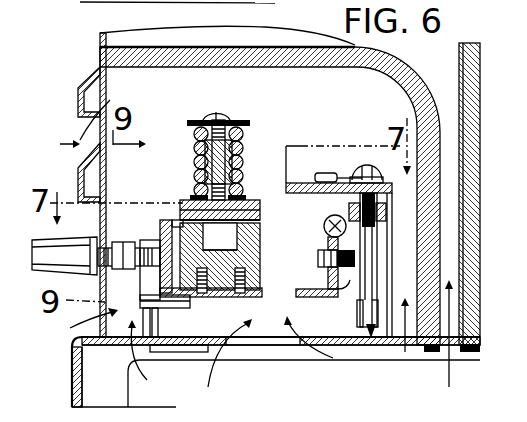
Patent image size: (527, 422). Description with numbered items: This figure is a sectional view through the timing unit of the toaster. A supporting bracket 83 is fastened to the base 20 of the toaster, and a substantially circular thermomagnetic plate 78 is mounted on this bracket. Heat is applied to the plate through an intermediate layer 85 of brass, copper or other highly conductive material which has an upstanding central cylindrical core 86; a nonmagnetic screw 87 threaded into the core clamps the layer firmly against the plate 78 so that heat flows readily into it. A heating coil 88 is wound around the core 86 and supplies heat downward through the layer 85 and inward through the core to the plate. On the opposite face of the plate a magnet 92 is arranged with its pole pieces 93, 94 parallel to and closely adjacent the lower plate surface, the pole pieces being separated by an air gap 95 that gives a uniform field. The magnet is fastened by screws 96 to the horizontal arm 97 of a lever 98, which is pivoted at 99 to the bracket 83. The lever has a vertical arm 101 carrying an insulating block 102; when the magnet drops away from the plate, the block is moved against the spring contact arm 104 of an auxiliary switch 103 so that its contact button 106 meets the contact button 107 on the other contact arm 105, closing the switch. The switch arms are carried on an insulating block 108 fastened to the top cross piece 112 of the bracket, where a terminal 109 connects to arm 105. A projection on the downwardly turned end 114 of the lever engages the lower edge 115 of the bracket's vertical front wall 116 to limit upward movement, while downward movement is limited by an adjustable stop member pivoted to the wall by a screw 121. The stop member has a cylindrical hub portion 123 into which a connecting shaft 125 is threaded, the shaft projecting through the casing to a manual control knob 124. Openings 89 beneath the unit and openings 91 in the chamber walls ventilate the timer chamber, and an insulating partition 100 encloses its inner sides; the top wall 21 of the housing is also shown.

The base 20 is at (73, 351).
The top cover wall 21 is at (100, 47).
The thermomagnetic plate 78 is at (287, 160).
The supporting bracket 83 is at (391, 259).
The intermediate layer 85 is at (258, 200).
The central cylindrical core 86 is at (262, 163).
The screw 87 is at (259, 216).
The heating coil 88 is at (248, 128).
The openings 89 is at (271, 346).
The openings 91 is at (93, 86).
The magnet 92 is at (218, 241).
The pole piece 93 is at (258, 228).
The pole piece 94 is at (182, 208).
The air gap 95 is at (251, 259).
The screws 96 is at (202, 294).
The horizontal arm 97 is at (240, 294).
The lever 98 is at (280, 326).
The pivot 99 is at (331, 228).
The insulating partition 100 is at (379, 66).
The vertical arm 101 is at (333, 275).
The insulating block 102 is at (340, 296).
The auxiliary switch 103 is at (373, 338).
The spring contact arm 104 is at (358, 281).
The contact arm 105 is at (373, 283).
The contact button 106 is at (364, 326).
The contact button 107 is at (371, 327).
The insulating block 108 is at (357, 204).
The terminal 109 is at (358, 158).
The top cross piece 112 is at (322, 172).
The downwardly turned end 114 is at (184, 309).
The lower edge 115 is at (128, 390).
The vertical front wall 116 is at (148, 222).
The screw 121 is at (166, 220).
The cylindrical hub portion 123 is at (143, 238).
The manual control knob 124 is at (57, 242).
The connecting shaft 125 is at (121, 241).